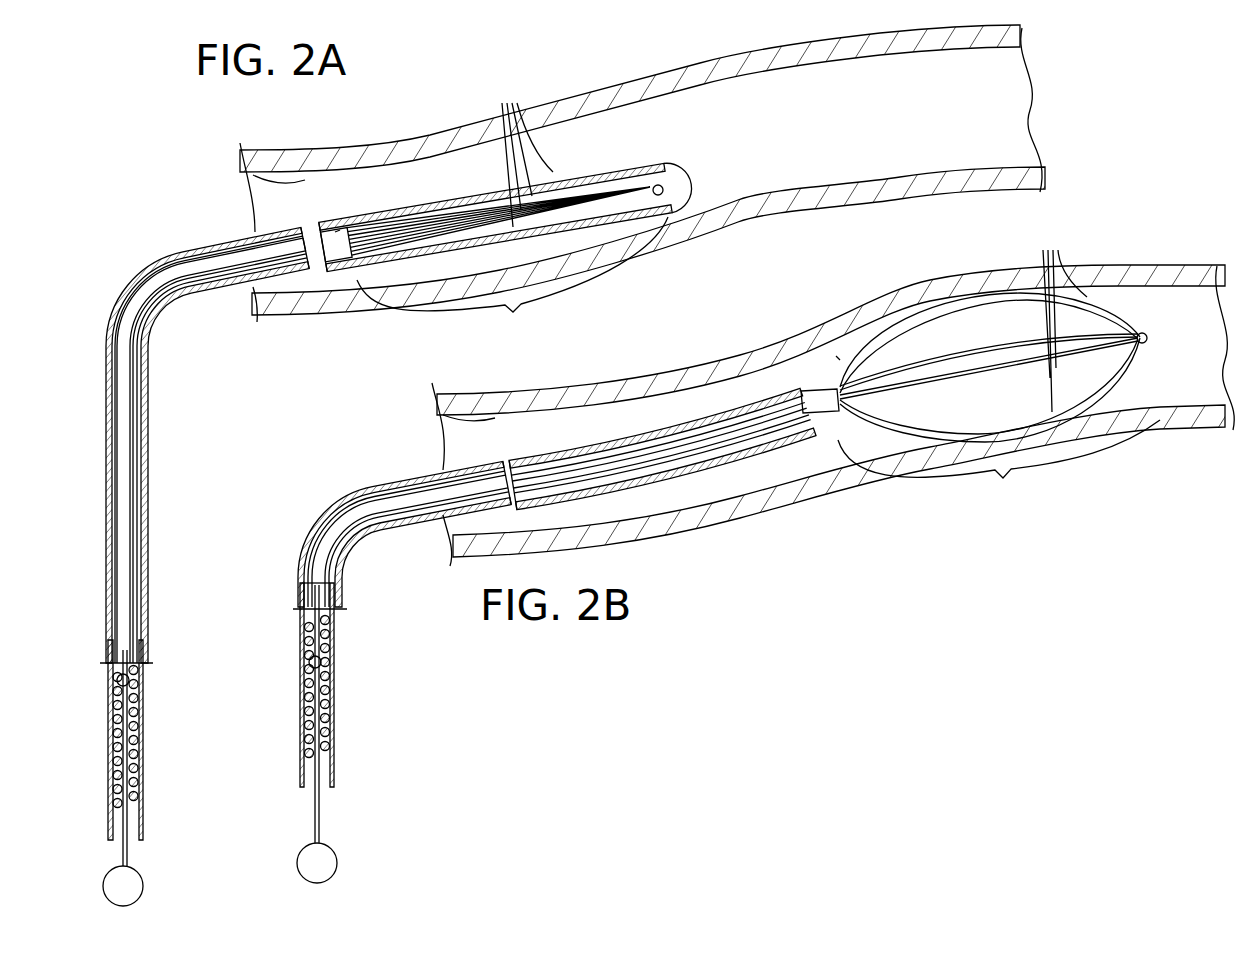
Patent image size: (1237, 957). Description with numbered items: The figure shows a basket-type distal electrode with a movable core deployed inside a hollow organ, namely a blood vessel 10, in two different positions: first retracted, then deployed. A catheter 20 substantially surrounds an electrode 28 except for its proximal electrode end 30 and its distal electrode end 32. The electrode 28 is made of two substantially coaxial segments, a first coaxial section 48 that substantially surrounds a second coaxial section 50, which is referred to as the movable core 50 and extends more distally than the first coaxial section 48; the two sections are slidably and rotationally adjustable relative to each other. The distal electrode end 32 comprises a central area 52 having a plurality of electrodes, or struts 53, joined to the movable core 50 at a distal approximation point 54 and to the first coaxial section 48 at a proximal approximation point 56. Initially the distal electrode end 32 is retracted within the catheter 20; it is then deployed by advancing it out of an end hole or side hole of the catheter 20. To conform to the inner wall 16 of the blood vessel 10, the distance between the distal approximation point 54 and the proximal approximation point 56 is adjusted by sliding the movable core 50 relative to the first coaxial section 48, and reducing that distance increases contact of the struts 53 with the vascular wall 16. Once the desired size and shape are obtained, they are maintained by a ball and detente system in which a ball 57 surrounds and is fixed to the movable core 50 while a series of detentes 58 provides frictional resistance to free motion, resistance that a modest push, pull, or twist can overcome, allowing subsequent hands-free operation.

In FIG. 2A, the blood vessel 10 is at (272, 214).
In FIG. 2B, the blood vessel 10 is at (463, 453).
In FIG. 2A, the inner wall 16 is at (255, 198).
In FIG. 2B, the inner wall 16 is at (440, 440).
In FIG. 2A, the catheter 20 is at (605, 167).
In FIG. 2B, the catheter 20 is at (572, 455).
In FIG. 2A, the electrode 28 is at (175, 278).
In FIG. 2B, the electrode 28 is at (632, 455).
In FIG. 2A, the proximal electrode end 30 is at (142, 785).
In FIG. 2B, the proximal electrode end 30 is at (330, 727).
In FIG. 2A, the distal electrode end 32 is at (340, 237).
In FIG. 2B, the distal electrode end 32 is at (855, 443).
In FIG. 2A, the first coaxial section 48 is at (142, 820).
In FIG. 2B, the first coaxial section 48 is at (330, 765).
In FIG. 2A, the movable core 50 is at (480, 227).
In FIG. 2B, the movable core 50 is at (960, 363).
In FIG. 2A, the central area 52 is at (512, 277).
In FIG. 2B, the central area 52 is at (999, 463).
In FIG. 2A, the struts 53 is at (523, 150).
In FIG. 2B, the struts 53 is at (1060, 317).
In FIG. 2A, the distal approximation point 54 is at (680, 183).
In FIG. 2B, the distal approximation point 54 is at (1157, 338).
In FIG. 2A, the proximal approximation point 56 is at (337, 230).
In FIG. 2B, the proximal approximation point 56 is at (838, 358).
In FIG. 2A, the ball 57 is at (130, 682).
In FIG. 2B, the ball 57 is at (323, 663).
In FIG. 2A, the detentes 58 is at (140, 745).
In FIG. 2B, the detentes 58 is at (330, 692).